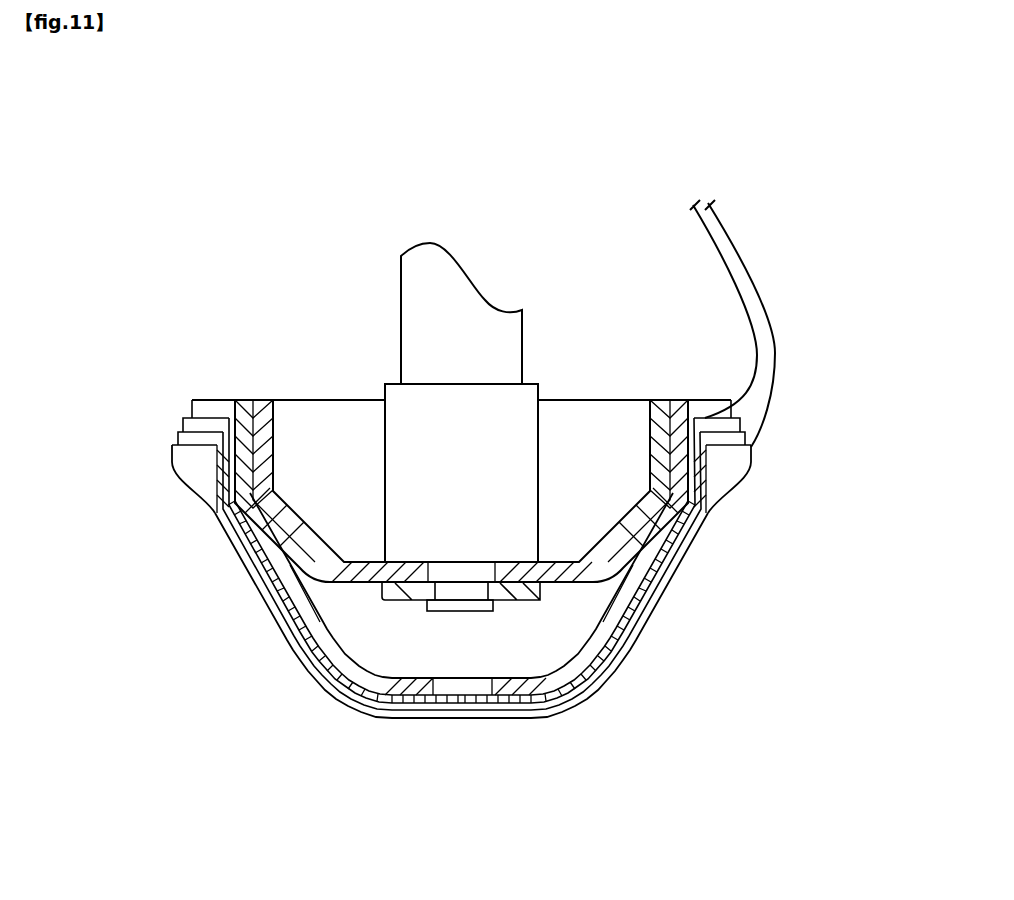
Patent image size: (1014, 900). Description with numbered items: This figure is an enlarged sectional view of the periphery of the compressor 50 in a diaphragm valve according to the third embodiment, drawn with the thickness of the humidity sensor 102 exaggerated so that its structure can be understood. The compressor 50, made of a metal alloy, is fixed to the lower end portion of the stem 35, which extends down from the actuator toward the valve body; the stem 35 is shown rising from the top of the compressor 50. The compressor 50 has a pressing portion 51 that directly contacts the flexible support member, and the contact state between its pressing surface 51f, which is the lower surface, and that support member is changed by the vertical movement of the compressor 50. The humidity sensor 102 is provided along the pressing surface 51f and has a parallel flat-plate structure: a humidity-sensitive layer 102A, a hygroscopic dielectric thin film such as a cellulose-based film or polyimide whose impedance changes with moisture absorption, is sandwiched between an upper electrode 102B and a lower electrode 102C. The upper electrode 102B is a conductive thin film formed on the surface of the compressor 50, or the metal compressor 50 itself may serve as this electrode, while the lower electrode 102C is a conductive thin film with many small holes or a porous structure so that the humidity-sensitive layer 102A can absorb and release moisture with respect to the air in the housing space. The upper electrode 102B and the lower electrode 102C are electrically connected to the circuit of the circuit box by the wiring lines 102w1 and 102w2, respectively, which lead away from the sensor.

The stem 35 is at (482, 308).
The compressor 50 is at (297, 395).
The pressing portion 51 is at (288, 568).
The pressing surface 51f is at (280, 632).
The humidity sensor 102 is at (506, 650).
The humidity-sensitive layer 102A is at (647, 585).
The upper electrode 102B is at (686, 548).
The lower electrode 102C is at (647, 618).
The wiring line 102w1 is at (757, 330).
The wiring line 102w2 is at (772, 365).